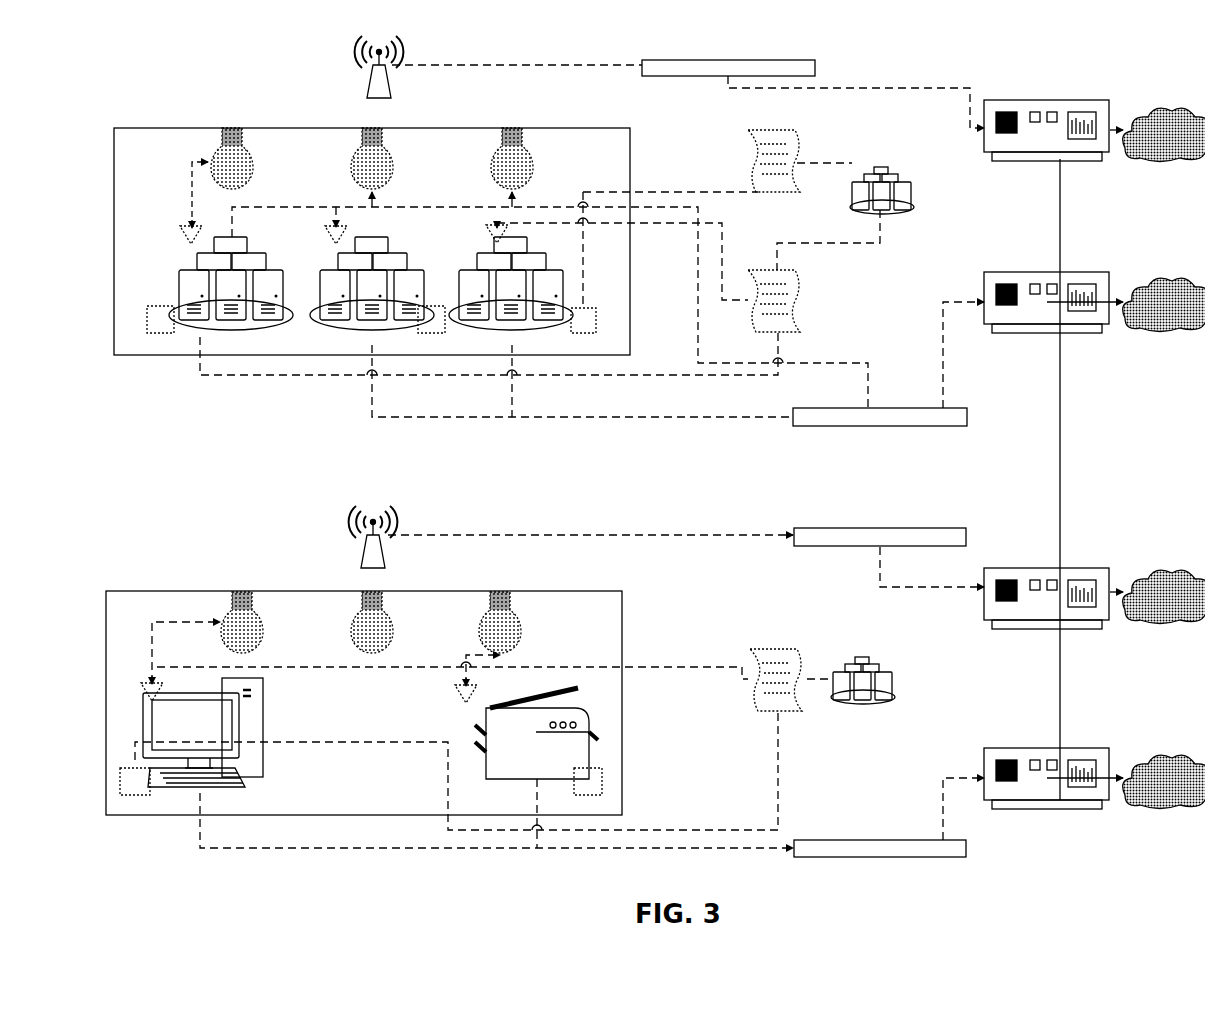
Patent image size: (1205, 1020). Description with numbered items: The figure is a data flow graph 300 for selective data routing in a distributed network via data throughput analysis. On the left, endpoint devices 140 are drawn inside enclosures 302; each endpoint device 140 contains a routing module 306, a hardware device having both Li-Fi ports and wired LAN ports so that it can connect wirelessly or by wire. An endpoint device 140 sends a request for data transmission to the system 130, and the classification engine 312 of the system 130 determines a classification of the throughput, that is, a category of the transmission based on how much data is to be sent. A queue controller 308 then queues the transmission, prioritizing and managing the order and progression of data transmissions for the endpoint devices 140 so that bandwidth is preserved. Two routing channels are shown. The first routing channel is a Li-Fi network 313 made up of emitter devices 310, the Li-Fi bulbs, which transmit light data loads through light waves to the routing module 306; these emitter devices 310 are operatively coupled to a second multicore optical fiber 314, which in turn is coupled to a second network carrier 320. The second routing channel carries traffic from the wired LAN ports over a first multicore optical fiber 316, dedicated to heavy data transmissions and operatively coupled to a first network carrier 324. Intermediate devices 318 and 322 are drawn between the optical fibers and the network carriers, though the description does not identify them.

The data flow graph 300 is at (1068, 42).
The site / location 302 is at (170, 128).
The routing module 306 is at (333, 228).
The queue controller 308 is at (147, 333).
The Li-Fi devices 310 is at (243, 130).
The classification engine 312 is at (795, 152).
The Li-Fi network 313 is at (392, 35).
The second multicore optical fiber 314 is at (772, 44).
The first multicore optical fiber 316 is at (880, 428).
The router / gateway 318 is at (1045, 110).
The second network carrier 320 is at (1170, 125).
The router / gateway 322 is at (1035, 285).
The first network carrier 324 is at (1165, 290).
The system 130 is at (905, 200).
The endpoint device 140 is at (228, 252).